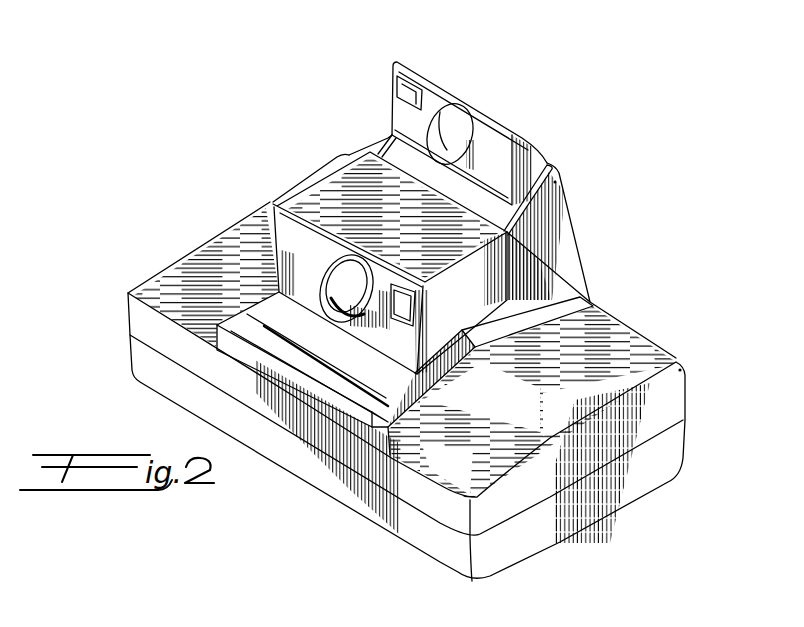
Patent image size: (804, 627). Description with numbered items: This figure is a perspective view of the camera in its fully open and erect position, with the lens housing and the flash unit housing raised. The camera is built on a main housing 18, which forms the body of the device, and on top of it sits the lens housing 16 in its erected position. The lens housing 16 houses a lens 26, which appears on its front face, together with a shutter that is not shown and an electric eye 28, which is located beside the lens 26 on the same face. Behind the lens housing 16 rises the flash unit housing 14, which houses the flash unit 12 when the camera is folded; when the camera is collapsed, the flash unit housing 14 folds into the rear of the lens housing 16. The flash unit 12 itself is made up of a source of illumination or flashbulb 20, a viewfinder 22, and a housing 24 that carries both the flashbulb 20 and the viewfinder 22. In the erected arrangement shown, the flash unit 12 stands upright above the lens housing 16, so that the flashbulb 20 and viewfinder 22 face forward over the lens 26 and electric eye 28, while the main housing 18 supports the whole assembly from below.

The flash unit 12 is at (400, 123).
The flash unit housing 14 is at (563, 245).
The lens housing 16 is at (525, 285).
The main housing 18 is at (664, 398).
The flashbulb 20 is at (453, 137).
The viewfinder 22 is at (407, 62).
The housing 24 is at (525, 162).
The lens 26 is at (322, 288).
The electric eye 28 is at (397, 298).